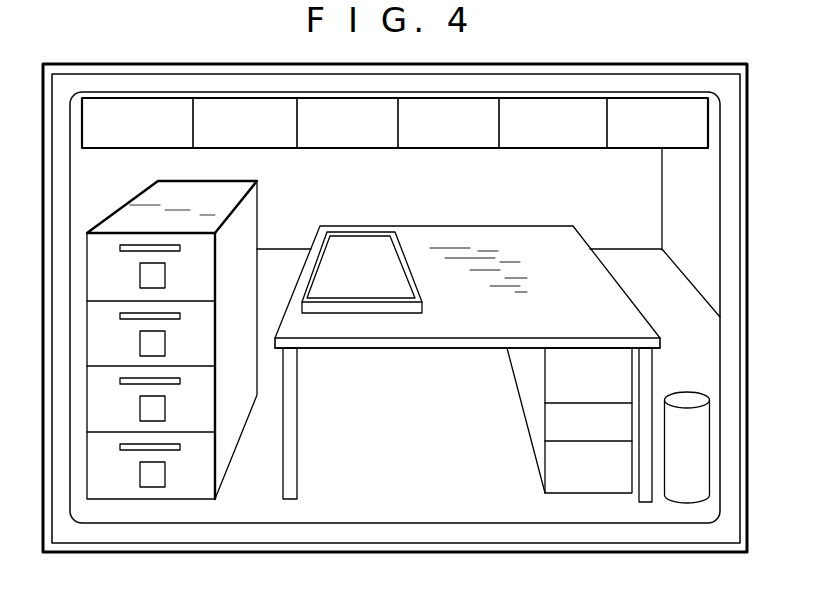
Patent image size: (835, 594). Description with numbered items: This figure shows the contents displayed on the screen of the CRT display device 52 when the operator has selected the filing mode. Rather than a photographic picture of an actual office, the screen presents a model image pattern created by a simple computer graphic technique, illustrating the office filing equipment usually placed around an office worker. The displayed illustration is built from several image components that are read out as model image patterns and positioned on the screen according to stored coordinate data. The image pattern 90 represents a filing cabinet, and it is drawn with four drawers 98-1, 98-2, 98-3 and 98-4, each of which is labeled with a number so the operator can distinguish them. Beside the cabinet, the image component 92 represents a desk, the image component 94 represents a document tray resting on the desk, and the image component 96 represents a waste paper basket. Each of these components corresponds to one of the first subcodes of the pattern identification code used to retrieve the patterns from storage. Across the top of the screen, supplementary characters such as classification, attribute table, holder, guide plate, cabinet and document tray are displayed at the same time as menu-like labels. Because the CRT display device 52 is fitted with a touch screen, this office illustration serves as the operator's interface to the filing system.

The CRT display device 52 is at (695, 553).
The image pattern representing the filing cabinet 90 is at (222, 331).
The drawer 98-1 is at (202, 260).
The drawer 98-2 is at (205, 350).
The drawer 98-3 is at (203, 400).
The drawer 98-4 is at (200, 463).
The image component representing a desk 92 is at (490, 327).
The image component representing a document tray 94 is at (362, 234).
The image component representing a waste paper basket 96 is at (684, 400).